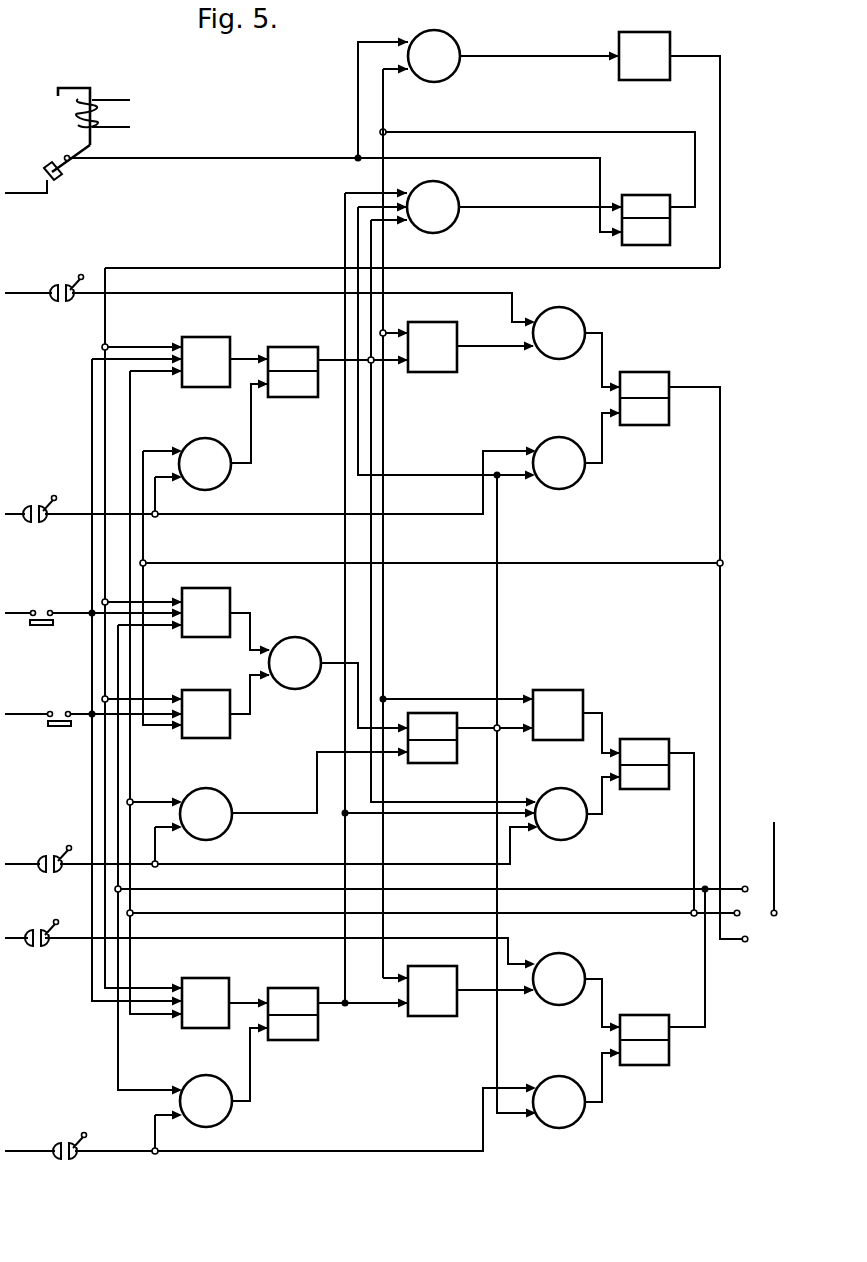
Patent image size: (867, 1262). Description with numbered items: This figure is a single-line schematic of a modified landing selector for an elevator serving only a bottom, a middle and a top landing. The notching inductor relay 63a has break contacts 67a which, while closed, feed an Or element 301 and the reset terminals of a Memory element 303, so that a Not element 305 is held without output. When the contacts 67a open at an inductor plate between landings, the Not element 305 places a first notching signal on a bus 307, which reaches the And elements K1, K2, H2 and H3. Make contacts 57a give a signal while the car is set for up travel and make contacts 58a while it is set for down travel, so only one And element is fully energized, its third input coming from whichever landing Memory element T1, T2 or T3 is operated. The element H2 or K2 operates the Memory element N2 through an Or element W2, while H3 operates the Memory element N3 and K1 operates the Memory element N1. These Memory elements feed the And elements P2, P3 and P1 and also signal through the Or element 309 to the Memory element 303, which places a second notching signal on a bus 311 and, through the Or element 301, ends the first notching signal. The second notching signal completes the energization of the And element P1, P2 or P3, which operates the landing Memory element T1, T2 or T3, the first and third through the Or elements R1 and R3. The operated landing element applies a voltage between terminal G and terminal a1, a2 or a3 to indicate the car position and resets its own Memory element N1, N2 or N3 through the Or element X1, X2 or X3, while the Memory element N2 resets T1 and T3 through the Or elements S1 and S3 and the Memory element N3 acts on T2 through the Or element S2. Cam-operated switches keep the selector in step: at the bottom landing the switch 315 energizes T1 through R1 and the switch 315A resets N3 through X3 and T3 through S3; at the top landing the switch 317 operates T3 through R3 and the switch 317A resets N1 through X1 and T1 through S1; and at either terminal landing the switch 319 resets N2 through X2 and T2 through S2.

The notching inductor relay 63a is at (135, 87).
The break contacts 67a is at (53, 179).
The Or element 301 is at (444, 30).
The Not element 305 is at (649, 31).
The bus 311 is at (383, 106).
The Or element 309 is at (432, 186).
The Memory element 303 is at (649, 194).
The bus 307 is at (289, 270).
The switch 317 is at (66, 289).
The switch 315A is at (36, 522).
The make contacts 57a is at (42, 626).
The make contacts 58a is at (68, 727).
The switch 319 is at (57, 872).
The switch 315 is at (37, 945).
The switch 317A is at (71, 1149).
The And element H3 is at (220, 337).
The Memory element N3 is at (306, 345).
The Or element X3 is at (222, 442).
The And element P3 is at (433, 322).
The Or element R3 is at (553, 311).
The Or element S3 is at (577, 441).
The Memory element T3 is at (653, 372).
The And element H2 is at (214, 588).
The And element K2 is at (219, 691).
The Or element W2 is at (312, 640).
The Or element X2 is at (222, 790).
The Memory element N2 is at (456, 721).
The And element P2 is at (572, 691).
The Or element S2 is at (580, 790).
The Memory element T2 is at (640, 739).
The And element K1 is at (218, 979).
The Memory element N1 is at (306, 989).
The Or element X1 is at (224, 1078).
The And element P1 is at (449, 967).
The Or element R1 is at (575, 955).
The Or element S1 is at (575, 1080).
The Memory element T1 is at (659, 1016).
The terminal a1 is at (747, 888).
The terminal a2 is at (741, 912).
The terminal a3 is at (746, 943).
The terminal G is at (775, 917).